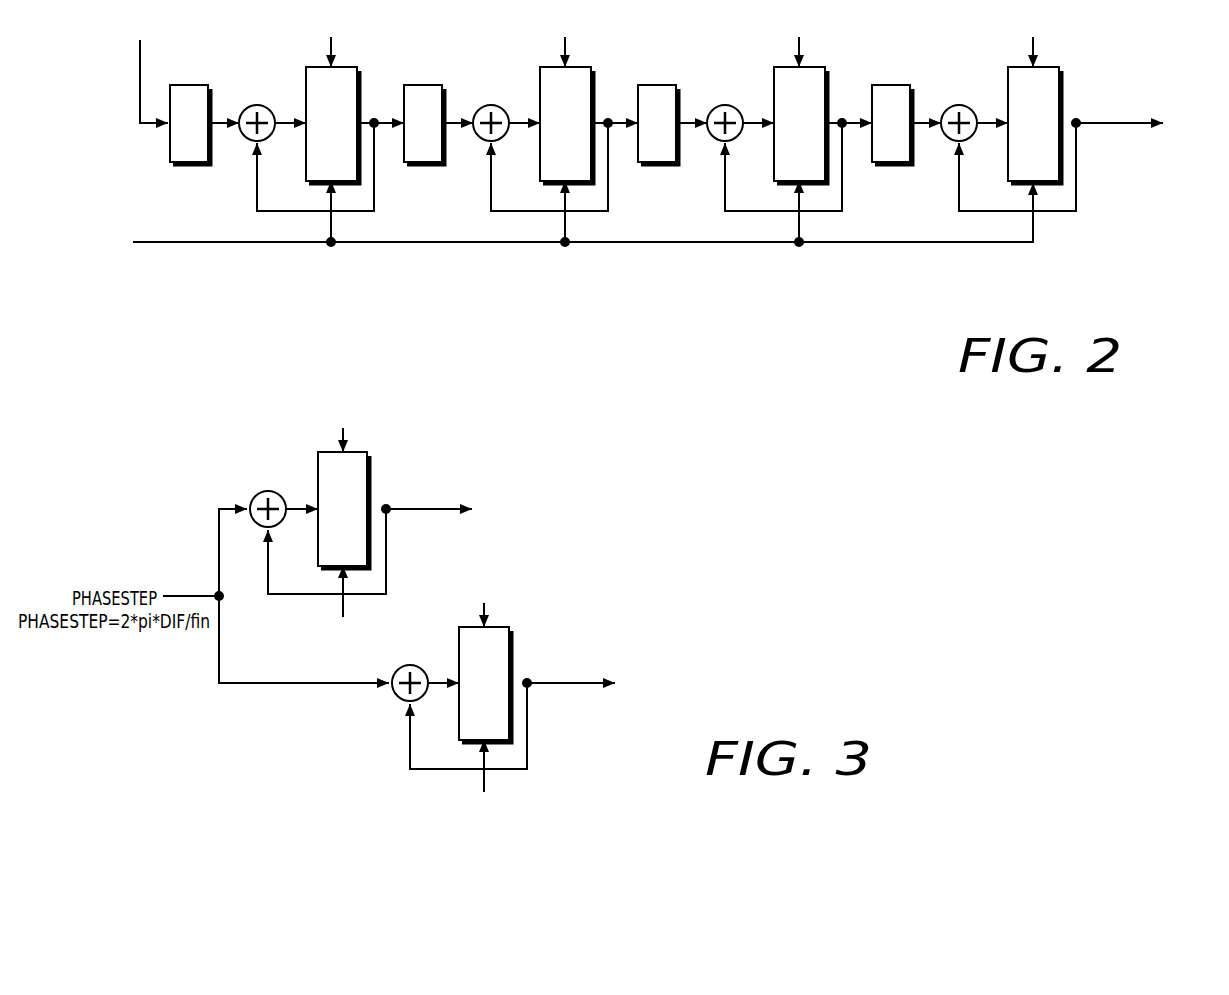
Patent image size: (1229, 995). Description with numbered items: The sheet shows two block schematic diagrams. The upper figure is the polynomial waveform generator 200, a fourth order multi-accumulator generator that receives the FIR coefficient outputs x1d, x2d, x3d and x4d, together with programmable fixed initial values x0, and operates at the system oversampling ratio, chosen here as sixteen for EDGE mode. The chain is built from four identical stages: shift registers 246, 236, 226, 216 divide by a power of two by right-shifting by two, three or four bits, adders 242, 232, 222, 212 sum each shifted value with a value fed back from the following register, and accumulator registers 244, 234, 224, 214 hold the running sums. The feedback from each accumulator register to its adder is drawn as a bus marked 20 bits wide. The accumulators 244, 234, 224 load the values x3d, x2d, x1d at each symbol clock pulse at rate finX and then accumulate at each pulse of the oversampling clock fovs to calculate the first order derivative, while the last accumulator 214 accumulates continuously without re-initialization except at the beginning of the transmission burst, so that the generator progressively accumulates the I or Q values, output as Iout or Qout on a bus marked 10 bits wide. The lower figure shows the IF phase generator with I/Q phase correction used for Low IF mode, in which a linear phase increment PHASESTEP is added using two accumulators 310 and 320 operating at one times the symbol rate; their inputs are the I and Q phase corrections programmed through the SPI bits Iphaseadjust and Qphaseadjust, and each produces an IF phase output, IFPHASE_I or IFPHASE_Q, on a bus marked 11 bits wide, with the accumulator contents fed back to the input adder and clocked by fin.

In FIG. 2, the polynomial waveform generator 200 is at (650, 161).
In FIG. 2, the shift register 246 is at (193, 85).
In FIG. 2, the adder 242 is at (261, 105).
In FIG. 2, the accumulator register 244 is at (317, 67).
In FIG. 2, the shift register 236 is at (425, 106).
In FIG. 2, the adder 232 is at (493, 105).
In FIG. 2, the accumulator register 234 is at (546, 108).
In FIG. 2, the shift register 226 is at (659, 106).
In FIG. 2, the adder 222 is at (727, 105).
In FIG. 2, the accumulator register 224 is at (780, 108).
In FIG. 2, the shift register 216 is at (893, 106).
In FIG. 2, the adder 212 is at (961, 105).
In FIG. 2, the accumulator register 214 is at (1015, 108).
In FIG. 2, the 20-bit feedback bus 20 is at (293, 203).
In FIG. 2, the 10-bit output bus 10 is at (1122, 117).
In FIG. 3, the accumulator 310 is at (270, 442).
In FIG. 3, the accumulator 320 is at (562, 627).
In FIG. 3, the 11-bit phase output bus 11 is at (430, 502).